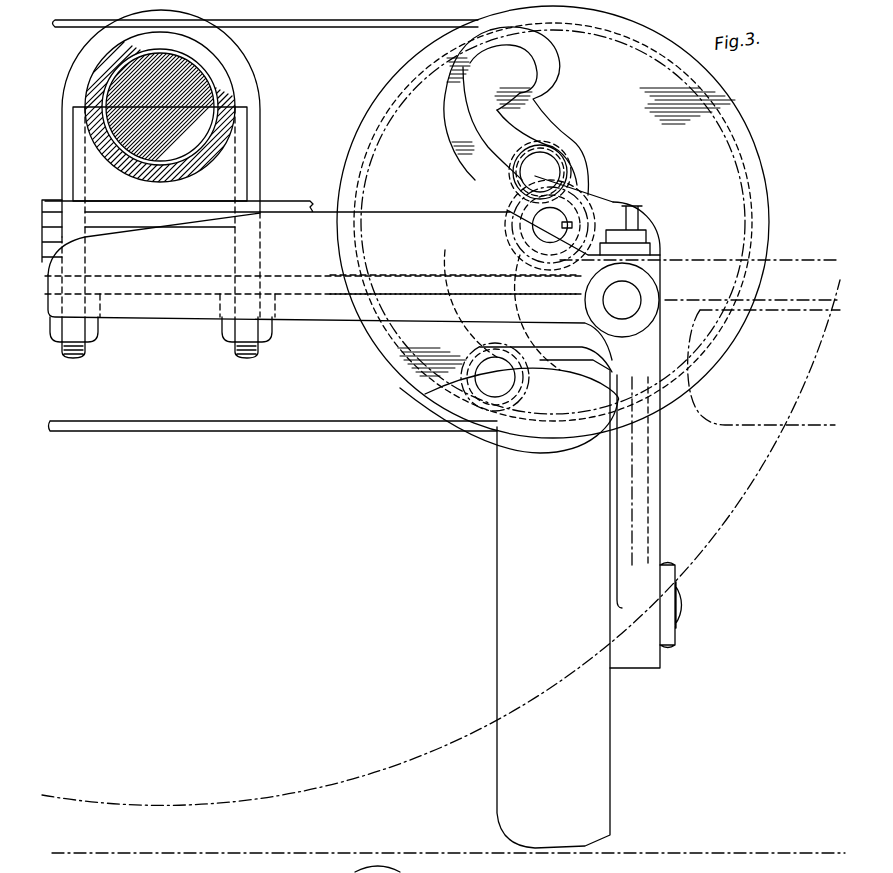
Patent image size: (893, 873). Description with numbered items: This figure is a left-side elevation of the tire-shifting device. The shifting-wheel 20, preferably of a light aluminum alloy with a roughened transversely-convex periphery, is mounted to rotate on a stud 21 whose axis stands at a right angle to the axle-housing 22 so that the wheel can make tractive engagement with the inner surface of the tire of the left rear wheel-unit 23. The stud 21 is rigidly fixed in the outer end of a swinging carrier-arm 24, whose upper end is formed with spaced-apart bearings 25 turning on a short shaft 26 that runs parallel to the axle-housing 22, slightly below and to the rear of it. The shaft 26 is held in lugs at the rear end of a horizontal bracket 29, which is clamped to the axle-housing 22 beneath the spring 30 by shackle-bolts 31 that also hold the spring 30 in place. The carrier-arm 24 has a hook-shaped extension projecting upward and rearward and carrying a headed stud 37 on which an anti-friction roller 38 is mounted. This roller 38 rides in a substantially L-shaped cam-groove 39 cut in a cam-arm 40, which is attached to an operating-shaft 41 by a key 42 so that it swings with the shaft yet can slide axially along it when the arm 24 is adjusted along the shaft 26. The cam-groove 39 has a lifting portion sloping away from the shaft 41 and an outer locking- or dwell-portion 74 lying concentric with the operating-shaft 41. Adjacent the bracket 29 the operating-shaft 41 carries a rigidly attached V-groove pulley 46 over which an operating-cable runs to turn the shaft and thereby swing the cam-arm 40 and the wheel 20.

The shifting-wheel 20 is at (497, 655).
The stud 21 is at (686, 605).
The axle-housing 22 is at (228, 76).
The left rear wheel-unit 23 is at (377, 768).
The swinging carrier-arm 24 is at (800, 248).
The bearings 25 is at (647, 276).
The short shaft 26 is at (641, 300).
The horizontal bracket 29 is at (326, 325).
The spring 30 is at (284, 203).
The shackle-bolts 31 is at (260, 115).
The headed stud 37 is at (568, 170).
The anti-friction roller 38 is at (526, 161).
The cam-groove 39 is at (458, 106).
The cam-arm 40 is at (557, 75).
The operating-shaft 41 is at (532, 226).
The key 42 is at (578, 222).
The V-groove pulley 46 is at (372, 106).
The locking- or dwell-portion 74 is at (527, 80).